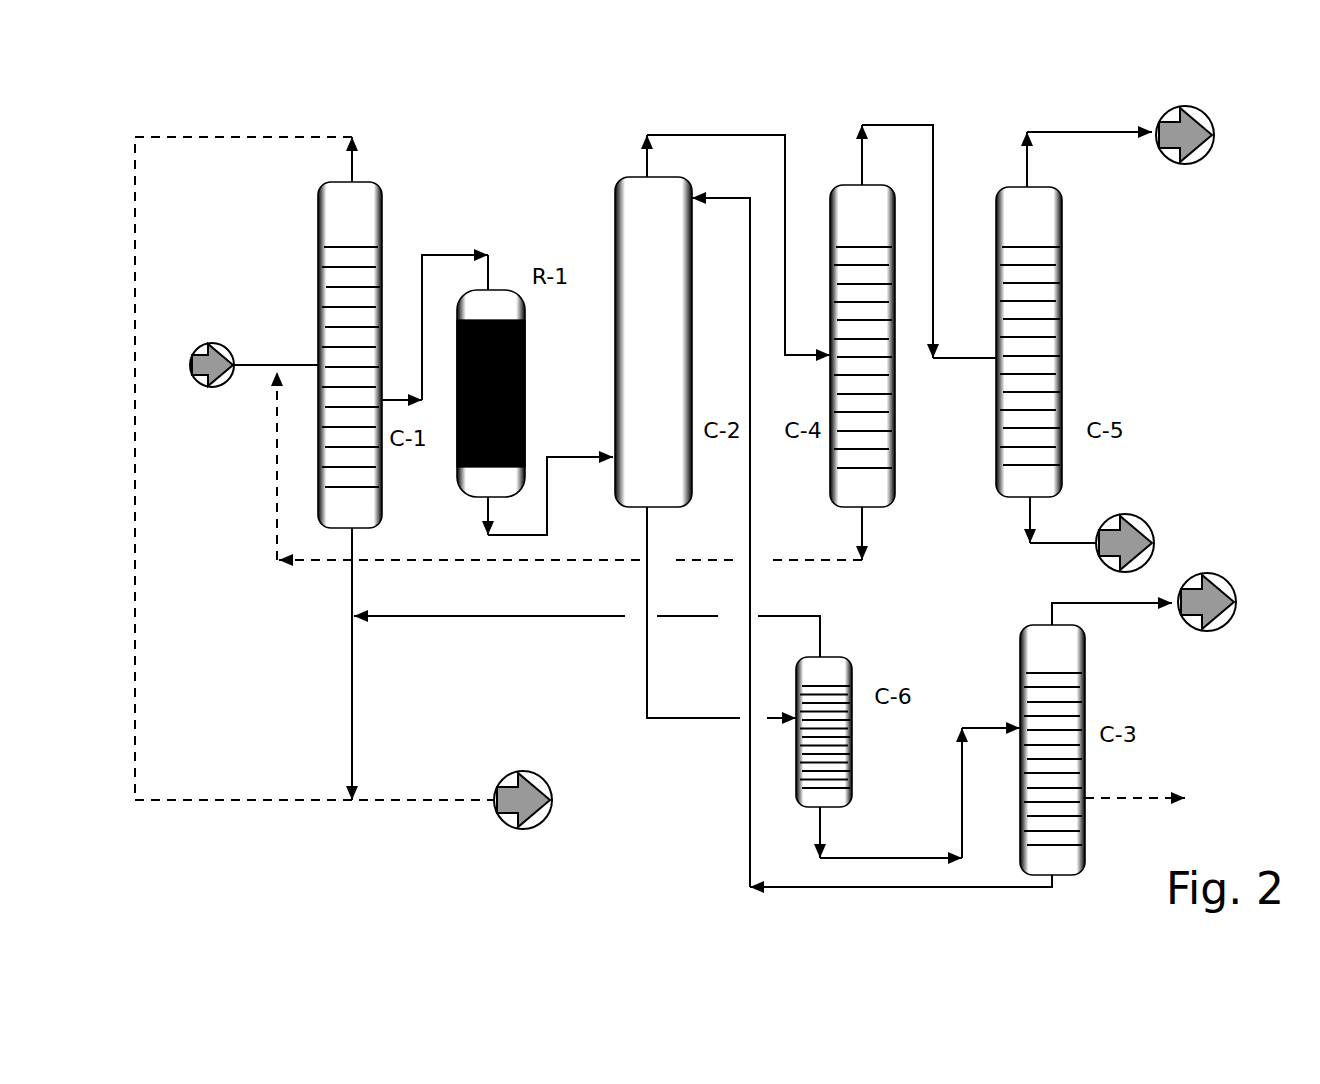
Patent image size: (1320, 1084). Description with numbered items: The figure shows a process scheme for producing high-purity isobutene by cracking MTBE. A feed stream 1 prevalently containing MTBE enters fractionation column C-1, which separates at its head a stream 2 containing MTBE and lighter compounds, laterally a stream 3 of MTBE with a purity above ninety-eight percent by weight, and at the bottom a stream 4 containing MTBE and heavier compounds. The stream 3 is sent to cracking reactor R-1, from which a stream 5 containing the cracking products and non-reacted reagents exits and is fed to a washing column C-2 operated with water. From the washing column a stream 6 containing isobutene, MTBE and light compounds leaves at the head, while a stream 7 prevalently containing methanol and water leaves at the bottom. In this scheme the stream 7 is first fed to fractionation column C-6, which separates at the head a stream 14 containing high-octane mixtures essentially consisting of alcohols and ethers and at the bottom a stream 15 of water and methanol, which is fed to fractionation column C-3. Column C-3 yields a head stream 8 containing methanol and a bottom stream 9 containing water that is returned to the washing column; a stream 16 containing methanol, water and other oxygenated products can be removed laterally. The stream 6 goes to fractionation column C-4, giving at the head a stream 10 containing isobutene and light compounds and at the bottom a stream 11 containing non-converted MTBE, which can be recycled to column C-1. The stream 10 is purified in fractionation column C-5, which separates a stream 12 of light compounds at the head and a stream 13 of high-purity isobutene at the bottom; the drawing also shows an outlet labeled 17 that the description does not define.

The stream prevalently containing MTBE 1 is at (254, 346).
The stream containing MTBE and compounds lighter than MTBE 2 is at (261, 464).
The stream of MTBE having a purity higher than 98% by weight 3 is at (435, 310).
The stream containing MTBE and compounds heavier than MTBE 4 is at (367, 664).
The stream containing the cracking products and non-reacted reagents 5 is at (550, 496).
The stream containing isobutene, MTBE and light compounds 6 is at (713, 244).
The stream prevalently containing methanol and water 7 is at (721, 612).
The stream containing methanol 8 is at (1144, 609).
The stream containing water 9 is at (872, 542).
The stream containing isobutene and light compounds 10 is at (929, 241).
The stream containing non-converted MTBE 11 is at (594, 466).
The stream containing light compounds 12 is at (1120, 156).
The stream of high-purity isobutene 13 is at (1111, 534).
The stream containing high-octane mixtures (HOM) 14 is at (611, 636).
The stream of water and methanol 15 is at (920, 793).
The stream containing methanol, water and other oxygenated products 16 is at (1135, 819).
The bottom product stream 17 is at (349, 819).